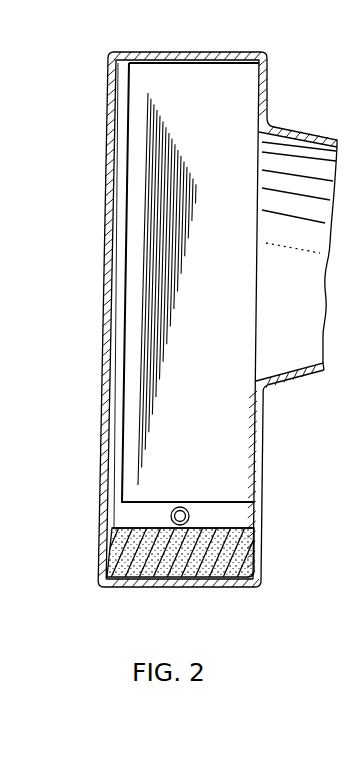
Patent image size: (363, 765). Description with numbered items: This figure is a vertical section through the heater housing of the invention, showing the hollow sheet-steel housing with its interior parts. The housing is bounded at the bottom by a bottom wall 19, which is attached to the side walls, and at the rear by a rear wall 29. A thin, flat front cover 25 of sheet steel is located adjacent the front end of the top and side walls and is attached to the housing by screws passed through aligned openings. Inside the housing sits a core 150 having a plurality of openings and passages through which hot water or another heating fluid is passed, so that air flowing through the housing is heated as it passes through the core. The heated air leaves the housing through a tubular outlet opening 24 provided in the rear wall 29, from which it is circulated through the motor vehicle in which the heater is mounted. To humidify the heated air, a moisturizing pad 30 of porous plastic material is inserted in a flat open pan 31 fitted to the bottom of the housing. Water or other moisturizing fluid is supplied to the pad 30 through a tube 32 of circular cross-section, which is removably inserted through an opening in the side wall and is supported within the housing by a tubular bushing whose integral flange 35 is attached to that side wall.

The bottom wall 19 is at (157, 587).
The tubular outlet opening 24 is at (285, 127).
The front cover 25 is at (102, 346).
The rear wall 29 is at (263, 452).
The moisturizing pad 30 is at (110, 550).
The flat open pan 31 is at (120, 579).
The tube 32 is at (178, 507).
The flange 35 is at (192, 525).
The core 150 is at (157, 93).